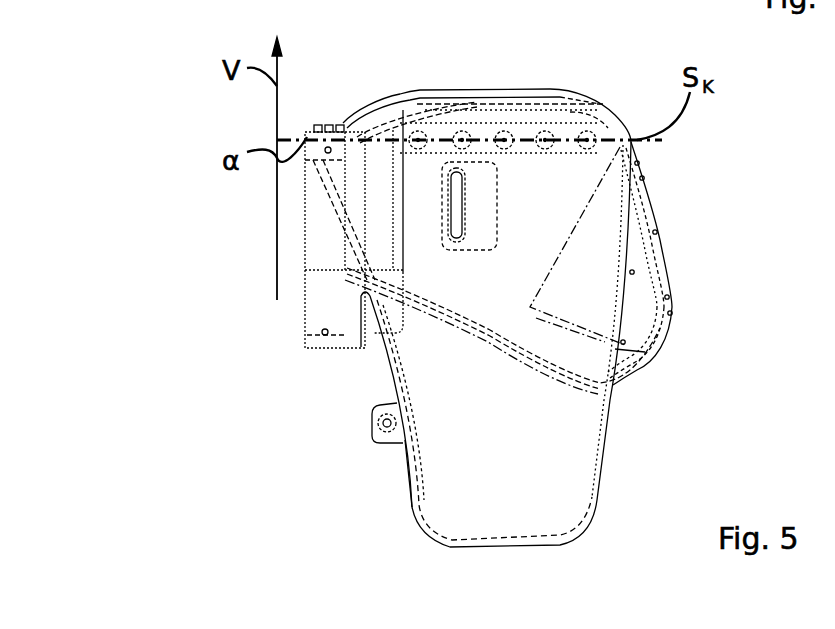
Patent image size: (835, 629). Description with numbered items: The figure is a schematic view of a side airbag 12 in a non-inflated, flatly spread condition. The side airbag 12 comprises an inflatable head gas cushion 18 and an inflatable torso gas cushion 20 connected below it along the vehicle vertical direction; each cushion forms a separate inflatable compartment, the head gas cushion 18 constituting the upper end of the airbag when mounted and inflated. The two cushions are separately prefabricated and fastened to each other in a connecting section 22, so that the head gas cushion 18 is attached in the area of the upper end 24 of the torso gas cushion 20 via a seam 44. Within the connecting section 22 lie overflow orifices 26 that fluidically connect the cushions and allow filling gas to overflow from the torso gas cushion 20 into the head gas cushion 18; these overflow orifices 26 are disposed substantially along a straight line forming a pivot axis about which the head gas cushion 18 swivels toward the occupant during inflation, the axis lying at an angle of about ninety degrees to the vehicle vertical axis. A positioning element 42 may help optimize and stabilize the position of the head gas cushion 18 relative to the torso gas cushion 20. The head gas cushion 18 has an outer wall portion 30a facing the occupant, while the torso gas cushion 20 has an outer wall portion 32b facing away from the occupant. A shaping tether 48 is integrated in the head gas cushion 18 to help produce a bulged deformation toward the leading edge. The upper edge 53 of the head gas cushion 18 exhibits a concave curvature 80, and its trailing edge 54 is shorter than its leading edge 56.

The side airbag 12 is at (193, 355).
The head gas cushion 18 is at (563, 97).
The torso gas cushion 20 is at (567, 497).
The connecting section 22 is at (590, 123).
The upper end of the torso gas cushion 24 is at (373, 102).
The overflow orifice 26 is at (587, 131).
The outer wall portion close to the vehicle occupant 30a is at (626, 365).
The outer wall portion far from the vehicle occupant 32b is at (442, 498).
The positioning element 42 is at (640, 305).
The seam 44 is at (417, 131).
The shaping tether 48 is at (477, 213).
The upper edge 53 is at (473, 327).
The trailing edge 54 is at (342, 208).
The leading edge 56 is at (660, 257).
The concave curvature 80 is at (500, 347).